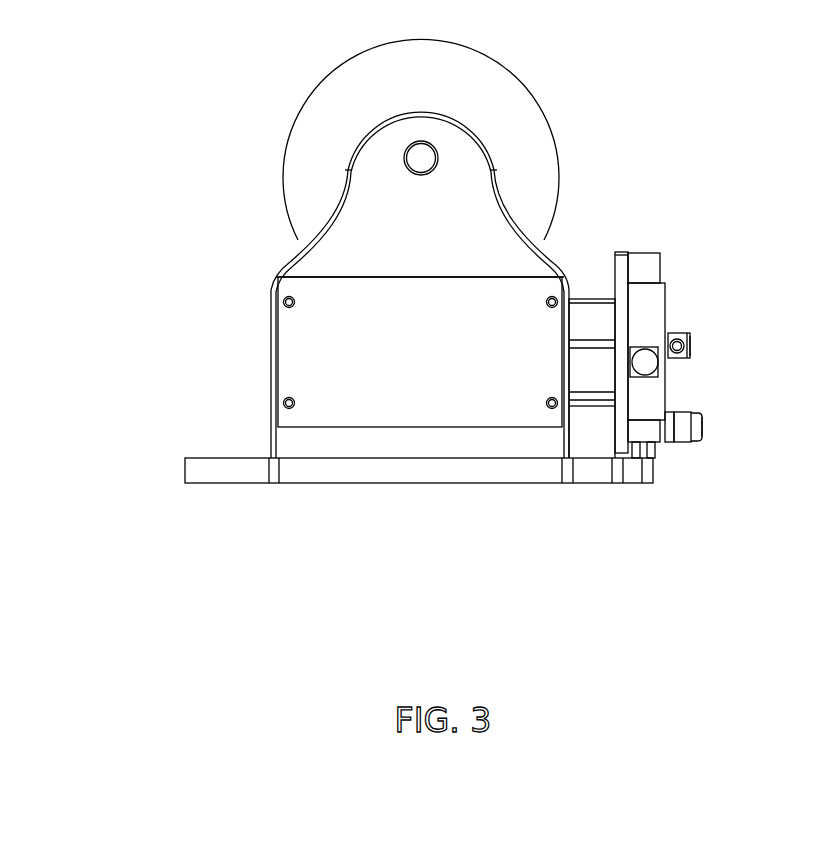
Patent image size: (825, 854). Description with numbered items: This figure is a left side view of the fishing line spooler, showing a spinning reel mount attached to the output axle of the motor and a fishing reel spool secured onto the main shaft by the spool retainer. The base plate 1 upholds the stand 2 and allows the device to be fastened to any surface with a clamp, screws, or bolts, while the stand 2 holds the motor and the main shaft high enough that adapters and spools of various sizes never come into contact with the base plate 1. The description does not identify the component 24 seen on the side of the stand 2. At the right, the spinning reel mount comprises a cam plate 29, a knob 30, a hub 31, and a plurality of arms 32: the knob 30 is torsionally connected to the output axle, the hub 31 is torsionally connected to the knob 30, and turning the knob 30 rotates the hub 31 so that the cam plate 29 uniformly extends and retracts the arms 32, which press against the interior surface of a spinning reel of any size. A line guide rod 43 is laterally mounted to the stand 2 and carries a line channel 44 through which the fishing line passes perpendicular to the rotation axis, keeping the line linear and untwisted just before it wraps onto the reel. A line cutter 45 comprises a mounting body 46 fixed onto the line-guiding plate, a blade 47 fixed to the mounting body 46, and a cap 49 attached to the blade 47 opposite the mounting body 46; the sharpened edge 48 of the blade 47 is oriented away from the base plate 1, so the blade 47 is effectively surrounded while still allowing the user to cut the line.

The base plate 1 is at (218, 468).
The stand 2 is at (303, 262).
The side panel 24 is at (467, 288).
The cam plate 29 is at (620, 252).
The knob 30 is at (583, 301).
The hub 31 is at (665, 291).
The plurality of arms 32 is at (645, 258).
The line guide rod 43 is at (690, 338).
The line channel 44 is at (672, 333).
The line cutter 45 is at (703, 430).
The mounting body 46 is at (667, 443).
The blade 47 is at (683, 441).
The sharpened edge 48 is at (676, 412).
The cap 49 is at (700, 412).